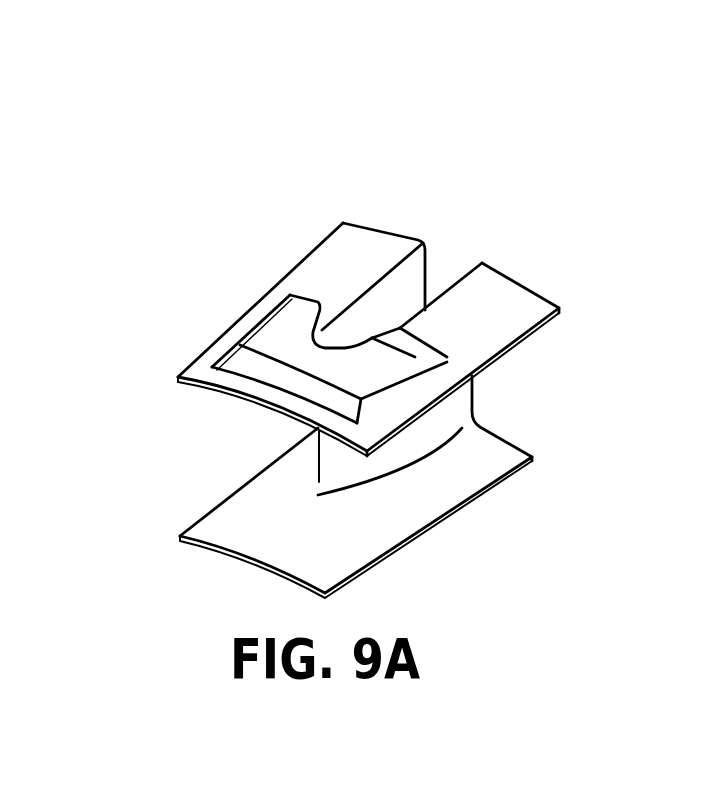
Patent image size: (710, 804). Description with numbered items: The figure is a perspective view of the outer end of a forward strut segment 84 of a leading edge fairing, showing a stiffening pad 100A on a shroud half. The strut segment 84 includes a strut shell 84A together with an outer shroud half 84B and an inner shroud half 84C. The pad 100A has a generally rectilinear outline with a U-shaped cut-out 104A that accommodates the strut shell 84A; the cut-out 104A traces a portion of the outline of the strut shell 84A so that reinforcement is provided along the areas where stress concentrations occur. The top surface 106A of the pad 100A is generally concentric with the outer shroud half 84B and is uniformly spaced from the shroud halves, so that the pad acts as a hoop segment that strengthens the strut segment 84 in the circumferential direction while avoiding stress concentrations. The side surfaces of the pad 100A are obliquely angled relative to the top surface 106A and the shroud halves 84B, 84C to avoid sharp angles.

The forward strut segment 84 is at (408, 208).
The strut shell 84A is at (333, 462).
The outer shroud half 84B is at (502, 328).
The inner shroud half 84C is at (480, 458).
The pad 100A is at (278, 347).
The U-shaped cut-out 104A is at (333, 345).
The top surface 106A is at (373, 370).